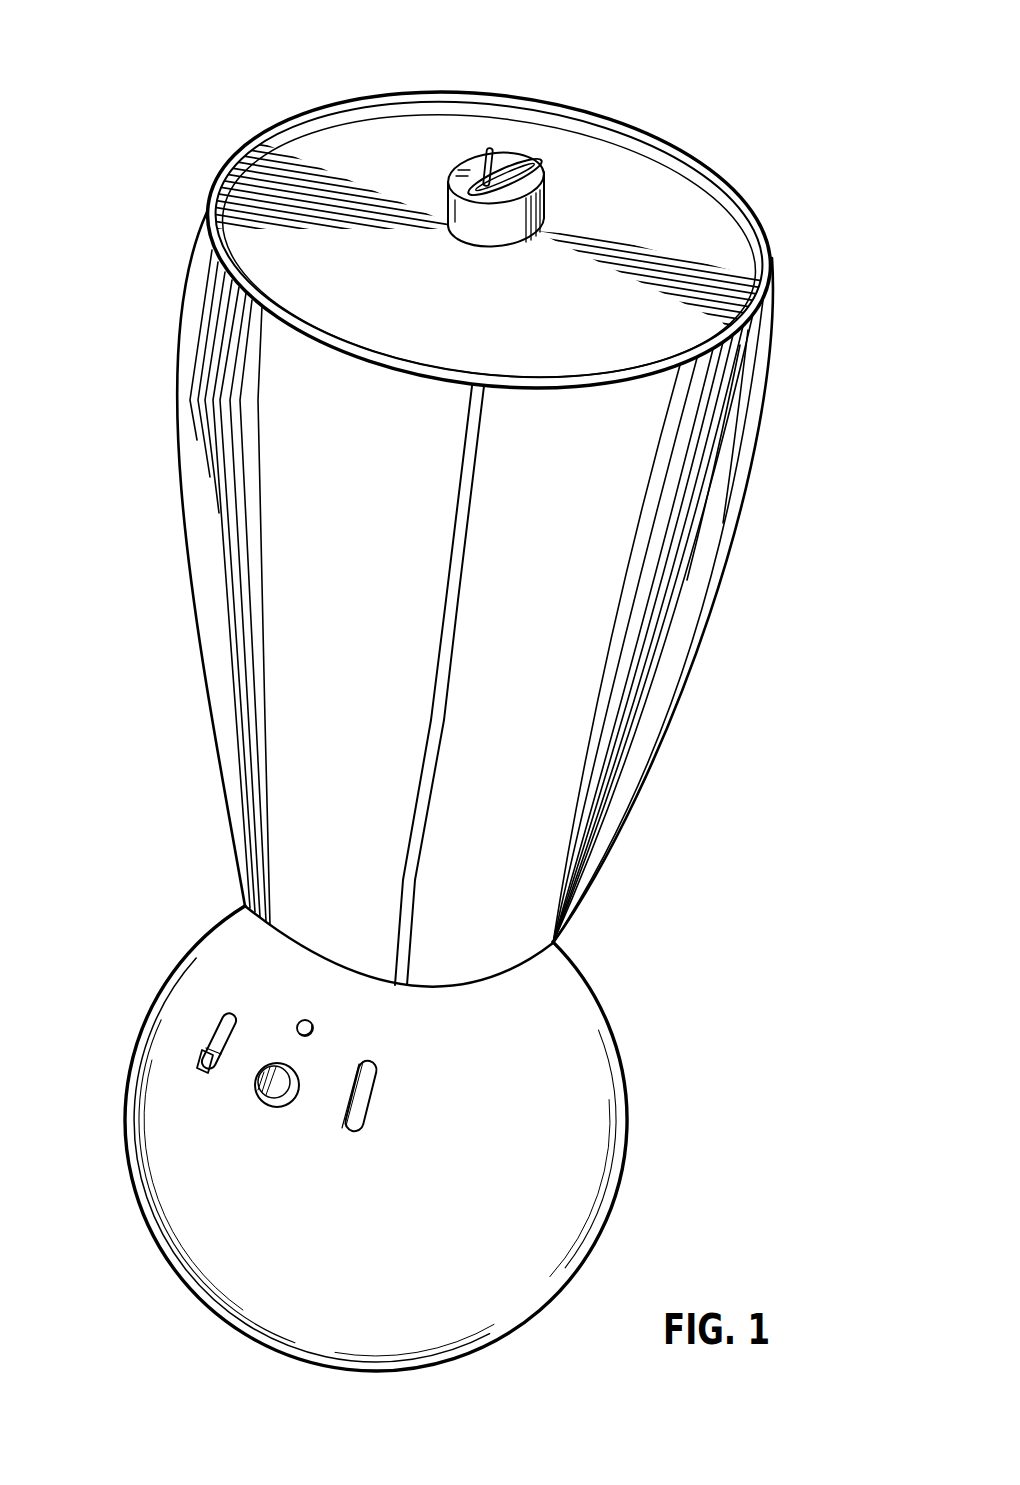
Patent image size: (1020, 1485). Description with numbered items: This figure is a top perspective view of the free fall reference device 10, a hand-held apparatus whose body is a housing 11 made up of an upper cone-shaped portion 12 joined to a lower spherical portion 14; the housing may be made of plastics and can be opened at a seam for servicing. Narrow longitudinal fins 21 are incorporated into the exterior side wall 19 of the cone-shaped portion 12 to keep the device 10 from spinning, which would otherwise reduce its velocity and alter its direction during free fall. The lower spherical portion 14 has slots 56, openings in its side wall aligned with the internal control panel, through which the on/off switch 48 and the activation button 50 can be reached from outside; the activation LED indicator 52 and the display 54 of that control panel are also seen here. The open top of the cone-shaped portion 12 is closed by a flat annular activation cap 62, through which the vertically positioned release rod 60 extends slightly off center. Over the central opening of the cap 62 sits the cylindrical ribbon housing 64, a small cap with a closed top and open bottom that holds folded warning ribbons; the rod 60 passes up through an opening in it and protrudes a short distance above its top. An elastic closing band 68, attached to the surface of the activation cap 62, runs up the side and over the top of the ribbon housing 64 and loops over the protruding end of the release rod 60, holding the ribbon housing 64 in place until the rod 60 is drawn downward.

The reference device 10 is at (230, 112).
The housing 11 is at (680, 771).
The upper cone-shaped portion 12 is at (330, 588).
The lower spherical portion 14 is at (582, 1035).
The exterior side wall 19 is at (518, 810).
The longitudinal fins 21 is at (205, 454).
The on/off switch 48 is at (200, 1060).
The activation button 50 is at (263, 1095).
The activation LED indicator 52 is at (300, 1022).
The display 54 is at (380, 1063).
The slots 56 is at (227, 1015).
The release rod 60 is at (489, 149).
The activation cap 62 is at (283, 232).
The ribbon housing 64 is at (540, 182).
The elastic closing band 68 is at (534, 156).